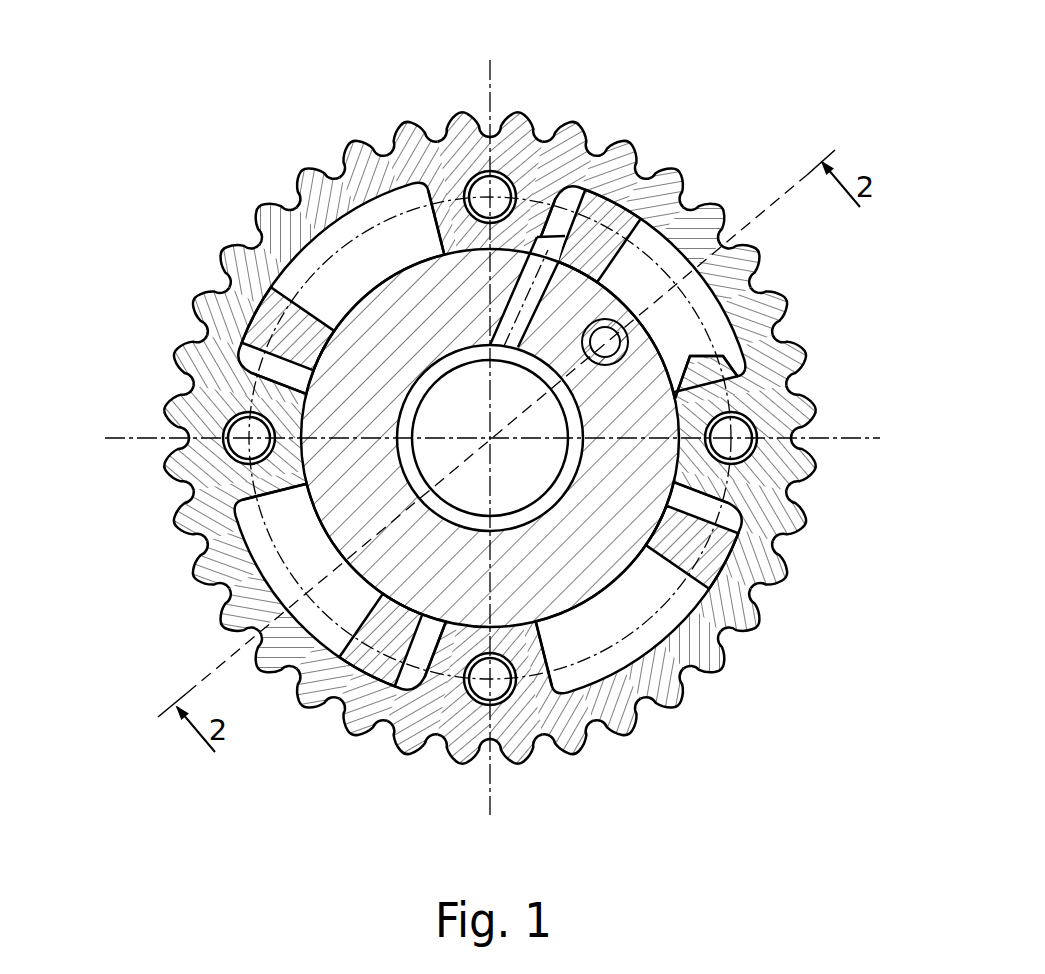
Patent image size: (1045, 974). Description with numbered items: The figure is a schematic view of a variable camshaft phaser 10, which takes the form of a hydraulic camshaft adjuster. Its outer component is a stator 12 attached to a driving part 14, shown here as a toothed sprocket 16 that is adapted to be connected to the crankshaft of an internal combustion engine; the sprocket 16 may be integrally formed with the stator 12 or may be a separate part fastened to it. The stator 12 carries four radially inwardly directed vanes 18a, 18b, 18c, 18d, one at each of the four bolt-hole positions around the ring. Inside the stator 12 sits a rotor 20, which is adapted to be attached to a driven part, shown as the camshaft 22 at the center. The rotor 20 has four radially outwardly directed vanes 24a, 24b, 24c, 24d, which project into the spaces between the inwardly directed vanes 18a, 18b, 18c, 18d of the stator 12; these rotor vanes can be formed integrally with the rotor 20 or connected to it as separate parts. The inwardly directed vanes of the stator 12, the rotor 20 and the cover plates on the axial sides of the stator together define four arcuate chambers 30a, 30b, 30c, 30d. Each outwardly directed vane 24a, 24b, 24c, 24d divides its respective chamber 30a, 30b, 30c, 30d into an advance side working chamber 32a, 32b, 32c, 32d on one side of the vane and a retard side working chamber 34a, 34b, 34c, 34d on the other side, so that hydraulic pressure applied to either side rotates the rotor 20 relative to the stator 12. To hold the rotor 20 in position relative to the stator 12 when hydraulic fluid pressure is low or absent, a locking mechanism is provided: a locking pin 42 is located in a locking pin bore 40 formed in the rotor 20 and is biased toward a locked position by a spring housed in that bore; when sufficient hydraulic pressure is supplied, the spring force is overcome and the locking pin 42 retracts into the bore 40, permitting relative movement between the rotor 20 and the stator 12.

The variable camshaft phaser 10 is at (487, 437).
The stator 12 is at (490, 385).
The driving part 14 is at (457, 157).
The sprocket 16 is at (490, 105).
The radially inwardly directed vane 18a is at (520, 185).
The radially inwardly directed vane 18b is at (758, 442).
The radially inwardly directed vane 18c is at (520, 690).
The radially inwardly directed vane 18d is at (226, 452).
The rotor 20 is at (291, 294).
The camshaft 22 is at (444, 417).
The radially outwardly directed vane 24a is at (613, 213).
The radially outwardly directed vane 24b is at (695, 590).
The radially outwardly directed vane 24c is at (375, 650).
The radially outwardly directed vane 24d is at (244, 360).
The chamber 30a is at (677, 260).
The chamber 30b is at (650, 650).
The chamber 30c is at (303, 640).
The chamber 30d is at (260, 325).
The advance side working chamber 32a is at (748, 370).
The advance side working chamber 32b is at (585, 688).
The advance side working chamber 32c is at (262, 496).
The advance side working chamber 32d is at (335, 241).
The retard side working chamber 34a is at (548, 210).
The retard side working chamber 34b is at (716, 558).
The retard side working chamber 34c is at (425, 655).
The retard side working chamber 34d is at (250, 372).
The locking pin bore 40 is at (628, 340).
The locking pin 42 is at (735, 352).